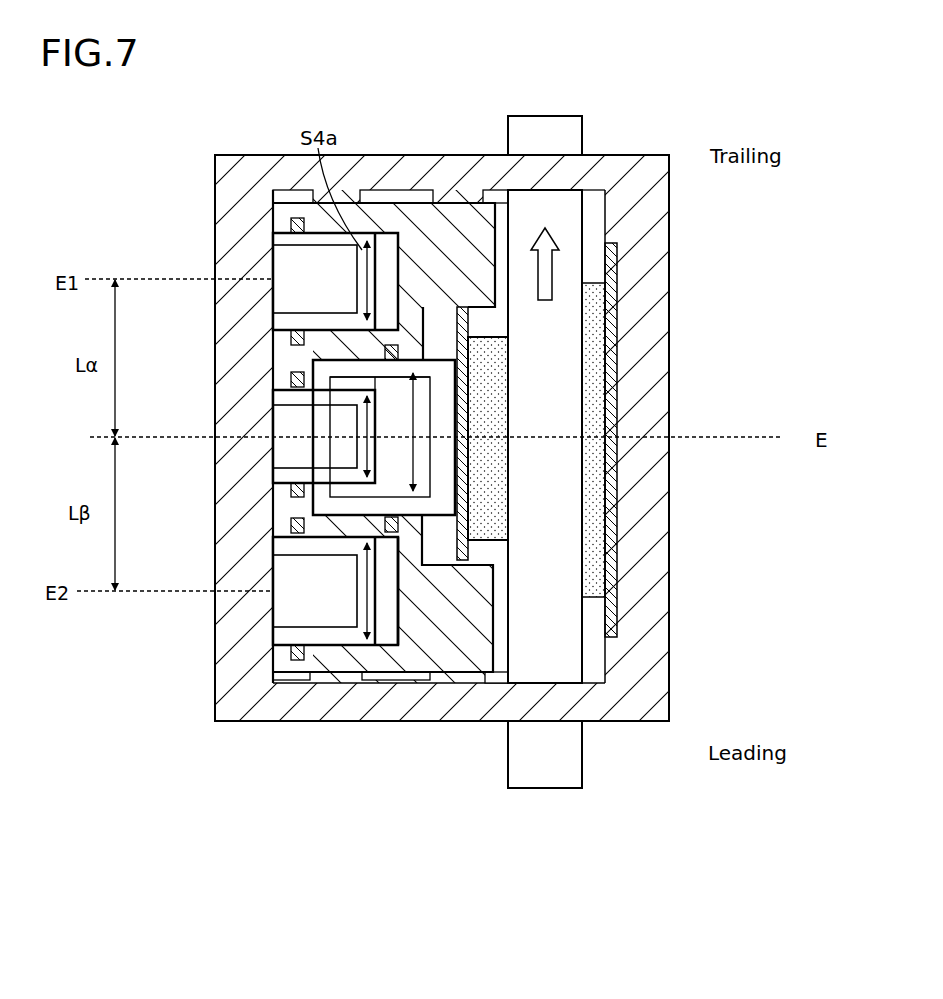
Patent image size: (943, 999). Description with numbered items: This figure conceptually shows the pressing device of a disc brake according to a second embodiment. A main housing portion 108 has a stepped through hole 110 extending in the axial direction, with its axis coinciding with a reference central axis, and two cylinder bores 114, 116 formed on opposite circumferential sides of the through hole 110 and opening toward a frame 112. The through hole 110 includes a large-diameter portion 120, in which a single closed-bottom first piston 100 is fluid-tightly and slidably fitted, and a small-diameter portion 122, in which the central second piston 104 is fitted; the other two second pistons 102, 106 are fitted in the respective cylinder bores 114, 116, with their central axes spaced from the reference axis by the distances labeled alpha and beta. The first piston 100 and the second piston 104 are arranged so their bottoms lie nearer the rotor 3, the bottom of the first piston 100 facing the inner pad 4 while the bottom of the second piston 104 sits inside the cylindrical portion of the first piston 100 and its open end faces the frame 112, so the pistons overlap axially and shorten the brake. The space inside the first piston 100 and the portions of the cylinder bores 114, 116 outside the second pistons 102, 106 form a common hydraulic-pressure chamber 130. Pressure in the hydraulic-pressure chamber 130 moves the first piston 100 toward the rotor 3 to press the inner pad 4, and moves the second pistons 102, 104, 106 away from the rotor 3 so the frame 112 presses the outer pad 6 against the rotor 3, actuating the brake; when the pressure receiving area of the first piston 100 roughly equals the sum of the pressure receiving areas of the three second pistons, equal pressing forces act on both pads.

The rotor 3 is at (546, 770).
The inner pad 4 is at (480, 553).
The outer pad 6 is at (597, 272).
The first piston 100 is at (430, 513).
The second piston 102 is at (290, 322).
The second piston 104 is at (290, 473).
The second piston 106 is at (290, 640).
The main housing portion 108 is at (417, 237).
The through hole 110 is at (312, 385).
The frame 112 is at (642, 172).
The cylinder bore 114 is at (285, 262).
The cylinder bore 116 is at (338, 645).
The large-diameter portion 120 is at (417, 425).
The small-diameter portion 122 is at (291, 428).
The hydraulic-pressure chamber 130 is at (352, 368).